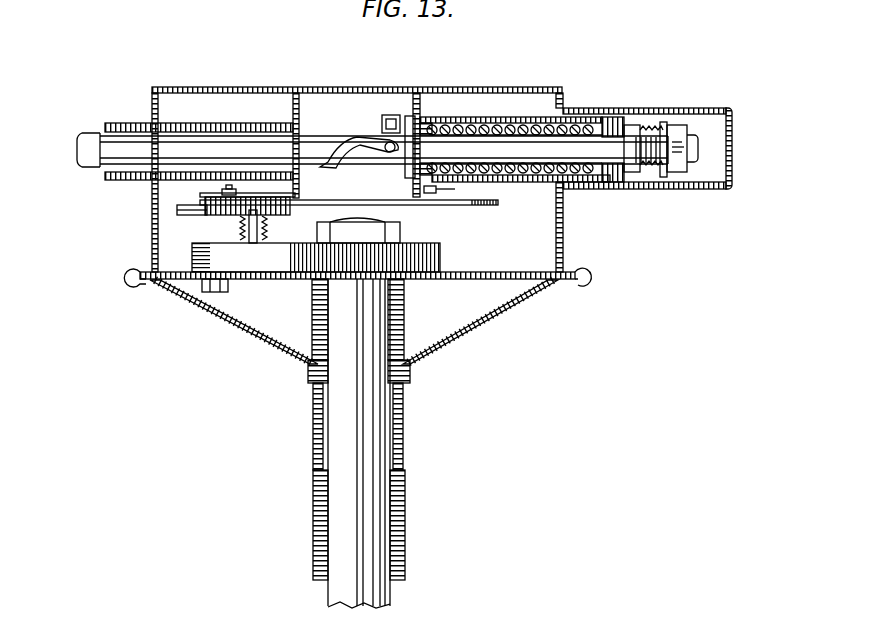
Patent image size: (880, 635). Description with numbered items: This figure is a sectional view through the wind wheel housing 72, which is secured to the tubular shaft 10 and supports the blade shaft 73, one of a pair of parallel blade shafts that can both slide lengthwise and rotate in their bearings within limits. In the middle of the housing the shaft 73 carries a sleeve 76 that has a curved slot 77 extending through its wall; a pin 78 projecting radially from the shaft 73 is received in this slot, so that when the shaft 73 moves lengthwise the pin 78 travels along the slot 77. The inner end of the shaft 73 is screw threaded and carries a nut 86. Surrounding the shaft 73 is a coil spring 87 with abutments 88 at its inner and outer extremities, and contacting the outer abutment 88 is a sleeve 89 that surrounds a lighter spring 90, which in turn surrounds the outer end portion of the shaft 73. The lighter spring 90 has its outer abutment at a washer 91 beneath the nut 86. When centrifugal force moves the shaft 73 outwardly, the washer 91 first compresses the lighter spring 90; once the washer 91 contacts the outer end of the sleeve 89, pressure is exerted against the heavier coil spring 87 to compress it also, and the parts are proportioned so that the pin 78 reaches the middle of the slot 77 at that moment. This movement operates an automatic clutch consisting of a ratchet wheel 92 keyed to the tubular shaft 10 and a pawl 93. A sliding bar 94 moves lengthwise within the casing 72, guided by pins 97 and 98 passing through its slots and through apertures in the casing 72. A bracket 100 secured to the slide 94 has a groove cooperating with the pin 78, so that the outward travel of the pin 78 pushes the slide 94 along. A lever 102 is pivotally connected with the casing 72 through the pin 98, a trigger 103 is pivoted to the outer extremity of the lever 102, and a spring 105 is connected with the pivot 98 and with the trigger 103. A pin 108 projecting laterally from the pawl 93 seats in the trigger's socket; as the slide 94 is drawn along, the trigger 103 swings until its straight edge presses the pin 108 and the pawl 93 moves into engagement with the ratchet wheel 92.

The tubular shaft 10 is at (377, 440).
The wind wheel housing 72 is at (337, 87).
The blade shaft 73 is at (82, 137).
The sleeve 76 is at (215, 140).
The curved slot 77 is at (332, 160).
The pin 78 is at (388, 151).
The nut 86 is at (677, 127).
The coil spring 87 is at (468, 125).
The abutments 88 is at (427, 126).
The sleeve 89 is at (633, 125).
The lighter spring 90 is at (655, 174).
The washer 91 is at (664, 178).
The ratchet wheel 92 is at (441, 252).
The pawl 93 is at (206, 262).
The sliding bar 94 is at (498, 204).
The pin 97 is at (455, 189).
The pin 98 is at (272, 193).
The bracket 100 is at (386, 116).
The lever 102 is at (190, 197).
The trigger 103 is at (182, 216).
The spring 105 is at (270, 232).
The pin 108 is at (256, 238).